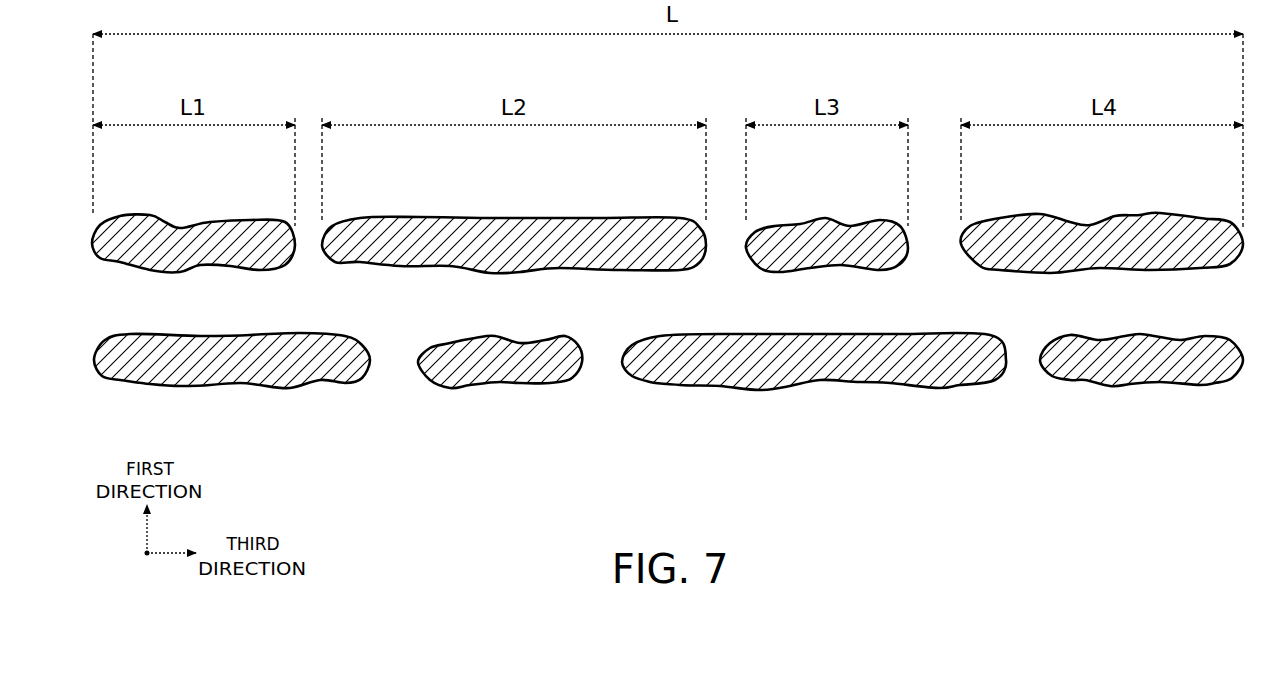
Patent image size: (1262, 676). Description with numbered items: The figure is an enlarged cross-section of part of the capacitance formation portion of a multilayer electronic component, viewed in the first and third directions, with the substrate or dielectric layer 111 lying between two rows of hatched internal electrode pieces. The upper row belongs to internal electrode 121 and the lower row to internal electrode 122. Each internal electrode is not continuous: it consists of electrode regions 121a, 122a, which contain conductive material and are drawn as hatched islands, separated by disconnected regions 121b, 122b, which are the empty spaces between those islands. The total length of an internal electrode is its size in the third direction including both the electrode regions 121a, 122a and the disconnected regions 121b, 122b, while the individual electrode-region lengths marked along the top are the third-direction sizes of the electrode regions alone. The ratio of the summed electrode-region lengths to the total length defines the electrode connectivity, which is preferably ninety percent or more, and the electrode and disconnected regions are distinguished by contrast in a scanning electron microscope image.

The substrate 111 is at (1190, 305).
The internal electrode 121 is at (667, 353).
The electrode region 121a is at (1003, 250).
The disconnected region 121b is at (930, 248).
The internal electrode 122 is at (668, 413).
The electrode region 122a is at (1108, 365).
The disconnected region 122b is at (1022, 412).